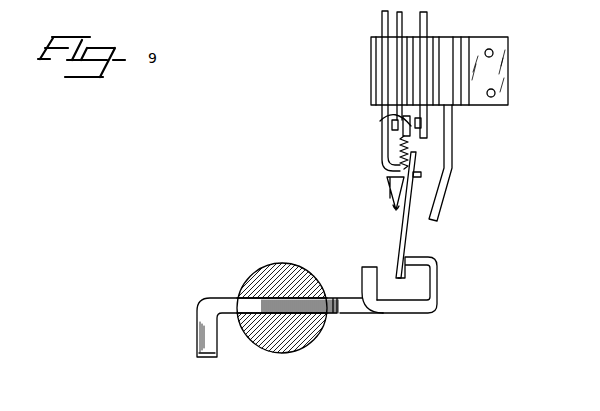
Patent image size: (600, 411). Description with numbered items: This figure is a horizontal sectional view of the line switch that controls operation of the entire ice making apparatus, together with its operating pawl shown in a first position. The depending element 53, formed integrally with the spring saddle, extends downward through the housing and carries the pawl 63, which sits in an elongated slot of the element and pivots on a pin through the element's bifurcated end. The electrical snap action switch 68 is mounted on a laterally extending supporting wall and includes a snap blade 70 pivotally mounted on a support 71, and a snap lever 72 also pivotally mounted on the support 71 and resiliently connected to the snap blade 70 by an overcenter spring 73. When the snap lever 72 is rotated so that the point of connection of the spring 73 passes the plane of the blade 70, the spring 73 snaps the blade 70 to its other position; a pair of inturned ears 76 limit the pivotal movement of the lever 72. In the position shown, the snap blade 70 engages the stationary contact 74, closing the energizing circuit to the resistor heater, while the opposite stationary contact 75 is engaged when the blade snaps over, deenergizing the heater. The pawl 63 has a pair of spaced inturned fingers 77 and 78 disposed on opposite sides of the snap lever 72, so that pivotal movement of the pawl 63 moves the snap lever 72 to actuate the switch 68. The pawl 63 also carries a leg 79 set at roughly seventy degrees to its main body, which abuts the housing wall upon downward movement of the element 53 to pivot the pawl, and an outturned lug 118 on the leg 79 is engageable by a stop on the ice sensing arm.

The depending element 53 is at (290, 340).
The pawl 63 is at (364, 324).
The electrical snap action switch 68 is at (488, 136).
The snap blade 70 is at (381, 119).
The support 71 is at (390, 184).
The snap lever 72 is at (404, 249).
The overcenter spring 73 is at (401, 161).
The stationary contact 74 is at (393, 130).
The stationary contact 75 is at (430, 123).
The inturned ears 76 is at (438, 212).
The inturned finger 77 is at (361, 284).
The inturned finger 78 is at (438, 287).
The leg 79 is at (228, 305).
The outturned lug 118 is at (212, 348).